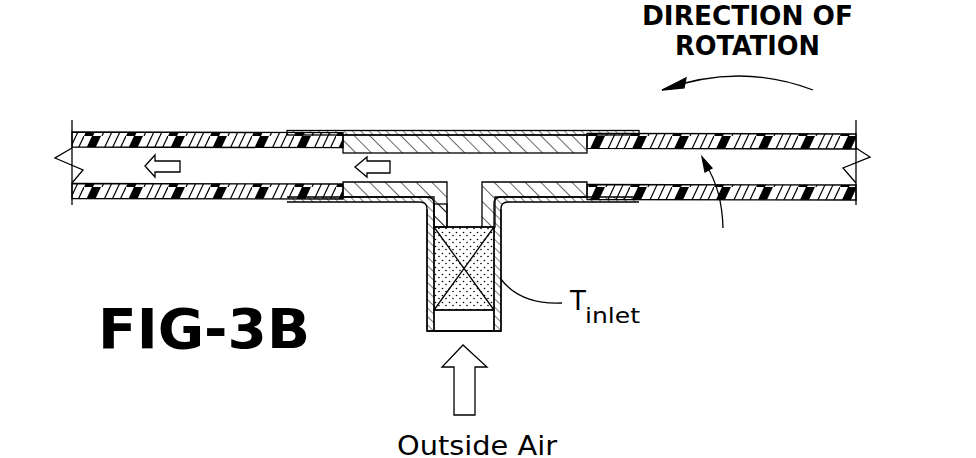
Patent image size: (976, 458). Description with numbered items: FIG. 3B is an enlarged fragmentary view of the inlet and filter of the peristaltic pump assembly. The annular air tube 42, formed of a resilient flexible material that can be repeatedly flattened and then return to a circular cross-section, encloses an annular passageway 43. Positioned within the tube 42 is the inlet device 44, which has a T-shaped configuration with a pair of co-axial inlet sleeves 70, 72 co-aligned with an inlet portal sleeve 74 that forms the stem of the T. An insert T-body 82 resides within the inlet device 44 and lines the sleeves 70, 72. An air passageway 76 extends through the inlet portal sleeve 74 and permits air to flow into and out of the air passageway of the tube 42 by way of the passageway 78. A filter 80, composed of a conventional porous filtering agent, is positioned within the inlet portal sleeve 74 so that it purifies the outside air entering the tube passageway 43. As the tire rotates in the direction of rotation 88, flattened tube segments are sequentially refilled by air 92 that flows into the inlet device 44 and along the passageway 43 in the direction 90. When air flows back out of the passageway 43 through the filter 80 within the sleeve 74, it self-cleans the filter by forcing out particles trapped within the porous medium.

The air tube 42 is at (128, 132).
The annular passageway 43 is at (723, 208).
The inlet device 44 is at (403, 297).
The inlet sleeve 70 is at (503, 135).
The inlet sleeve 72 is at (328, 131).
The inlet portal sleeve 74 is at (432, 265).
The air passageway 76 is at (473, 323).
The passageway 78 is at (555, 172).
The filter 80 is at (463, 297).
The insert T-body 82 is at (307, 202).
The direction of rotation 88 is at (815, 88).
The direction of air flow 90 is at (165, 167).
The air 92 is at (475, 392).